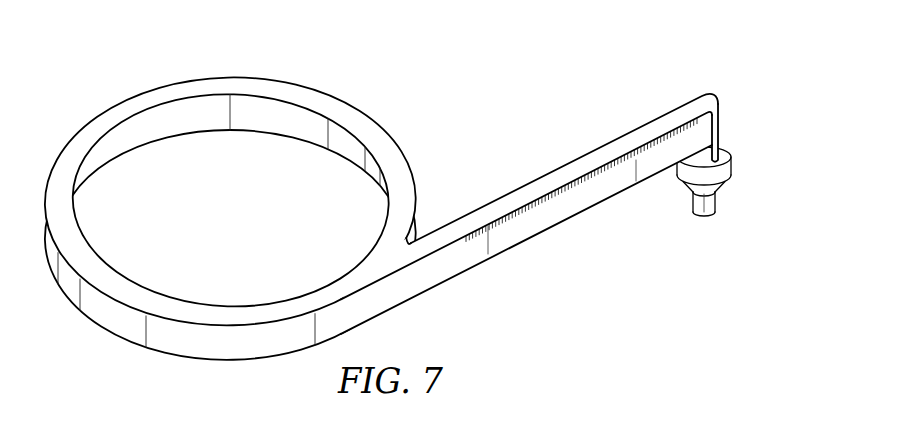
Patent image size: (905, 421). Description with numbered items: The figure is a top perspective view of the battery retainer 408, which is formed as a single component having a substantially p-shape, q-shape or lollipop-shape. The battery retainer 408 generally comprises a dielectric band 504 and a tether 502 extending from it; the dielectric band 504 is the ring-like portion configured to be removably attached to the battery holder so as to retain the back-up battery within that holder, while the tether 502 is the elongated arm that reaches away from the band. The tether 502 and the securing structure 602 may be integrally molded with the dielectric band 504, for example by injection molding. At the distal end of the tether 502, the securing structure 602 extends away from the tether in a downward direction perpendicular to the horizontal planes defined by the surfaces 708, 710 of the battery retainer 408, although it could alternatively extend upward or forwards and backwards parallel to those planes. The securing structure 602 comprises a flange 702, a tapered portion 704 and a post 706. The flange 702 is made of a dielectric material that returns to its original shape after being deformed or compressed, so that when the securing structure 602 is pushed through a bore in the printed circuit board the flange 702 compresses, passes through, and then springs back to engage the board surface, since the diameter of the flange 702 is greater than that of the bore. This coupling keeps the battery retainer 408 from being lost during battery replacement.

The battery retainer 408 is at (430, 198).
The dielectric band 504 is at (233, 57).
The tether 502 is at (573, 210).
The surface 708 is at (570, 171).
The surface 710 is at (531, 239).
The securing structure 602 is at (733, 110).
The flange 702 is at (747, 183).
The tapered portion 704 is at (719, 196).
The post 706 is at (719, 213).